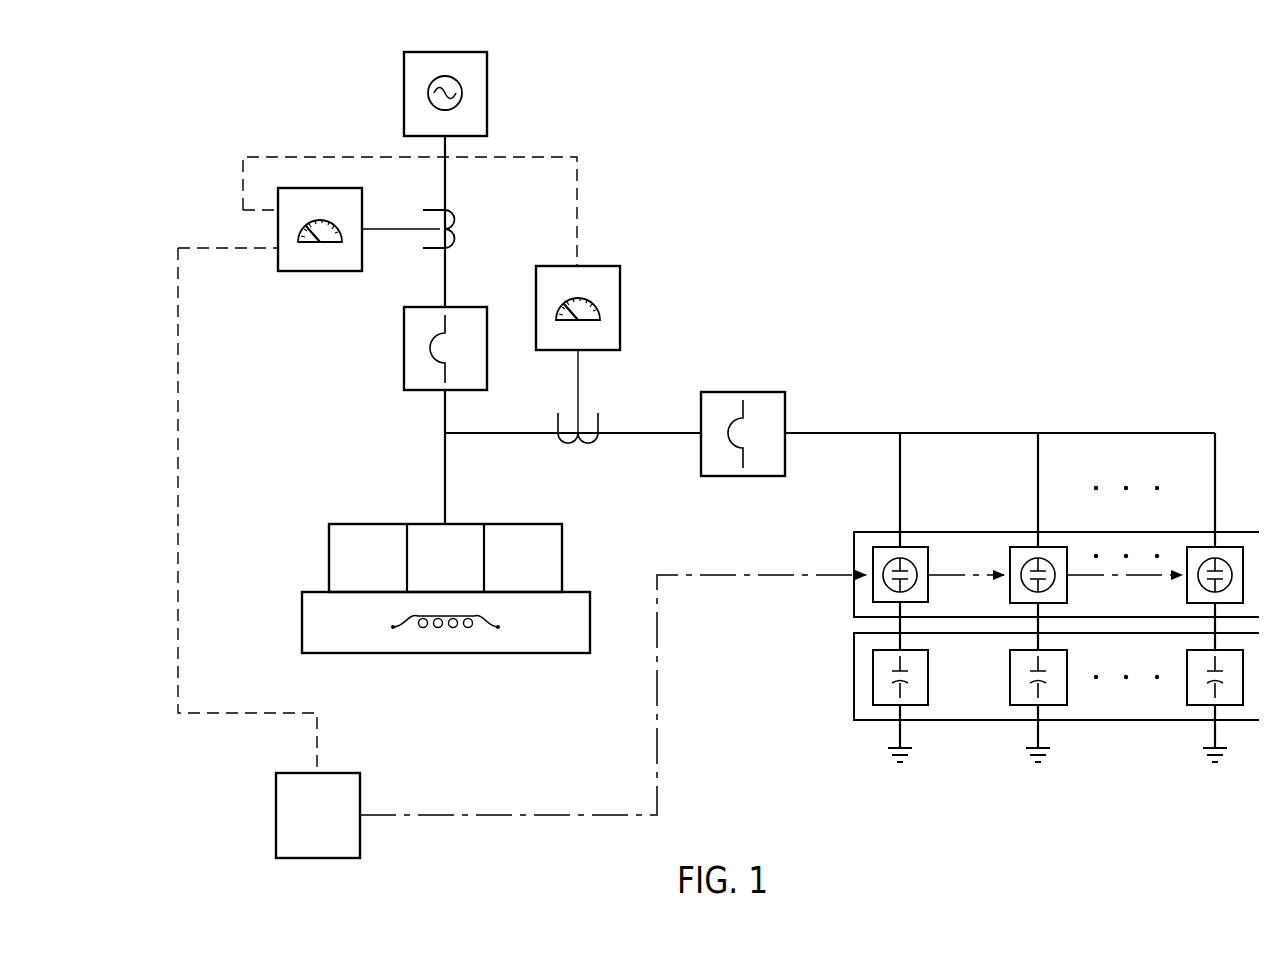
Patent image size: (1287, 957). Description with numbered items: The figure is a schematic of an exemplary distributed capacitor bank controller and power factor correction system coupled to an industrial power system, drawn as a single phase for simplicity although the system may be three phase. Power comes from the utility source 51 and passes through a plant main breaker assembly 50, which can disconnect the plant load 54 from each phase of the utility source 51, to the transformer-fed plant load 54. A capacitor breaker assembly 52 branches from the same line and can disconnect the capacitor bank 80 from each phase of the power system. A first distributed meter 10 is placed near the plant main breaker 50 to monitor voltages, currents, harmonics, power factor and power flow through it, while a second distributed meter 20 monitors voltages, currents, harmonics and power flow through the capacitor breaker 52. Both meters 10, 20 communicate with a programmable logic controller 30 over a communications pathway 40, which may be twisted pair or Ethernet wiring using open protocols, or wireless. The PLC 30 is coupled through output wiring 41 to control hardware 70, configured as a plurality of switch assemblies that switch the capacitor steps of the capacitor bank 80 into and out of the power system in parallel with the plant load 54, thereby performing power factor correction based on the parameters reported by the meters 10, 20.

The first distributed meter 10 is at (305, 272).
The second distributed meter 20 is at (620, 301).
The programmable logic controller 30 is at (360, 786).
The communications pathway 40 is at (273, 157).
The output wiring 41 is at (458, 827).
The plant main breaker assembly 50 is at (404, 350).
The utility source 51 is at (488, 100).
The capacitor breaker assembly 52 is at (742, 392).
The plant load 54 is at (302, 622).
The control hardware 70 is at (854, 545).
The capacitor bank 80 is at (854, 685).